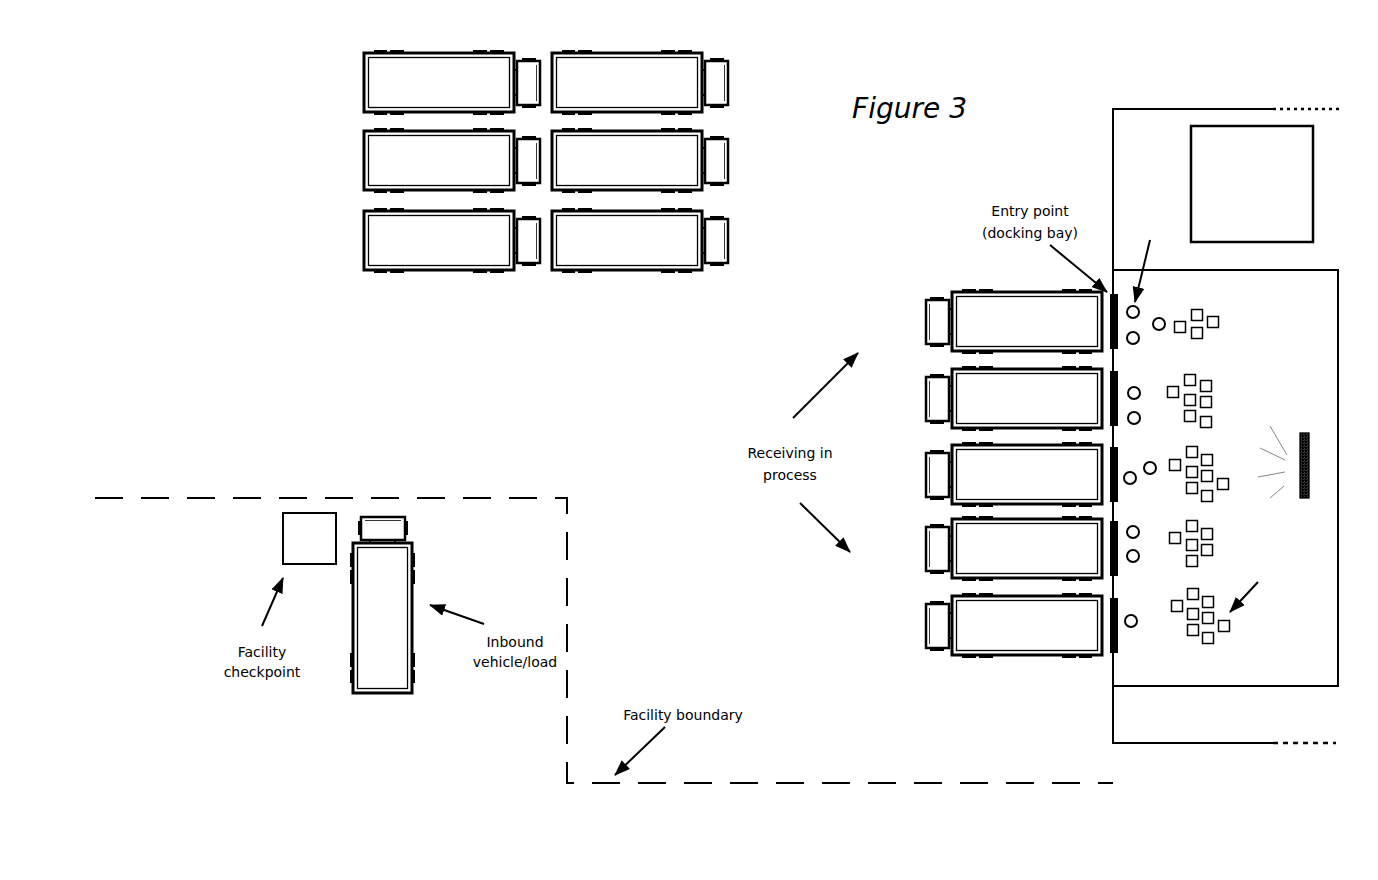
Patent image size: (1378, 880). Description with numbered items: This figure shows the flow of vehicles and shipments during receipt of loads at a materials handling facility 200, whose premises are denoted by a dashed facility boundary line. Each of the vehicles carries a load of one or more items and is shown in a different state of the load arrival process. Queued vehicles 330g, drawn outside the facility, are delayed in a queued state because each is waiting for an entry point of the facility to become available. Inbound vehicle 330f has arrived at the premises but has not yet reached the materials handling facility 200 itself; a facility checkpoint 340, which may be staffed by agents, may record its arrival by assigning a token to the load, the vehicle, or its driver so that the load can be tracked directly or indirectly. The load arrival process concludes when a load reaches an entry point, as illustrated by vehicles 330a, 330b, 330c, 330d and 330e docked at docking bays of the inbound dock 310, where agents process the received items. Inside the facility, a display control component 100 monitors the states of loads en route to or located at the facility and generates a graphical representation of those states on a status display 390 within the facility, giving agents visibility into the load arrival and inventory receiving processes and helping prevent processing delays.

The display control component 100 is at (1252, 184).
The materials handling facility 200 is at (1226, 426).
The inbound dock 310 is at (1225, 450).
The vehicle 330a is at (1022, 321).
The vehicle 330b is at (1022, 398).
The vehicle 330c is at (1022, 474).
The vehicle 330d is at (1022, 548).
The vehicle 330e is at (1022, 625).
The inbound vehicle 330f is at (382, 605).
The queued vehicle 330g is at (323, 200).
The facility checkpoint 340 is at (309, 538).
The status display 390 is at (1300, 424).